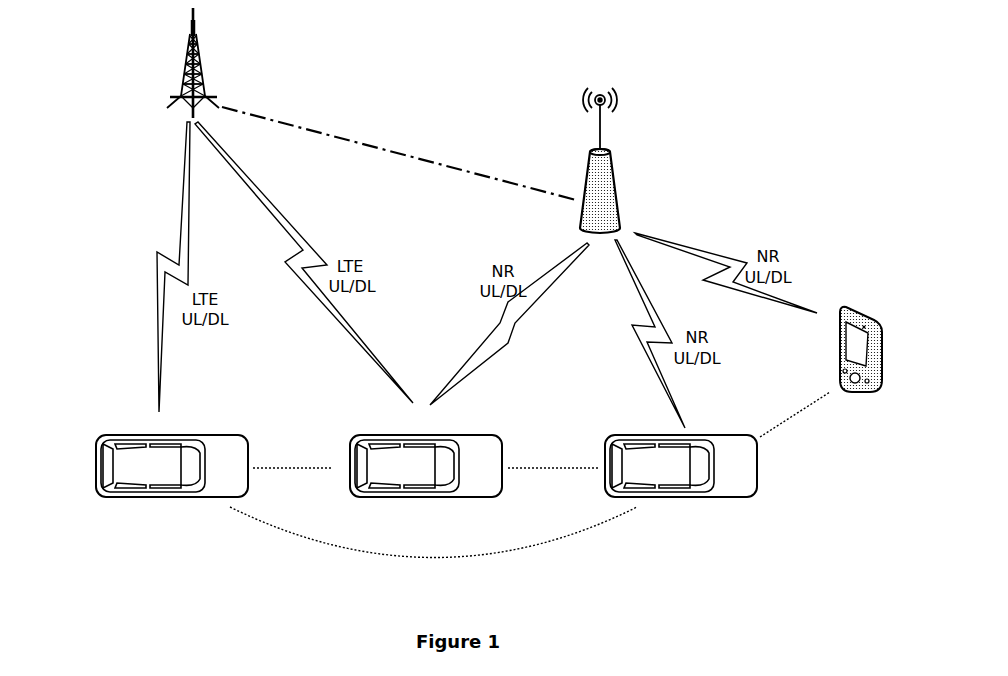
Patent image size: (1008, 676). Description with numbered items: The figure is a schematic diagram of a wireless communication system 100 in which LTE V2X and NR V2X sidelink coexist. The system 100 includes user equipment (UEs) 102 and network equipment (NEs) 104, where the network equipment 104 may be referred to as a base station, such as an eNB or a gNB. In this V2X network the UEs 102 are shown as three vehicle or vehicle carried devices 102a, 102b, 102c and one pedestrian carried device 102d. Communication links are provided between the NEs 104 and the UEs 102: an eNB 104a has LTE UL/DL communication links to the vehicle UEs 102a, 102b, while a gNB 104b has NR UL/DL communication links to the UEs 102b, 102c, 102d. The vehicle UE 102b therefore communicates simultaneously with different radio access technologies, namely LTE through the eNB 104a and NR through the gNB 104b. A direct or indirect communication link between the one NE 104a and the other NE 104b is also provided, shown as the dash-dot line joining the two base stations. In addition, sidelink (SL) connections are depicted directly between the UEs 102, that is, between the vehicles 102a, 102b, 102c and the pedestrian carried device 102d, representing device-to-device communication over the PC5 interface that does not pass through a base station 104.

The wireless communication system 100 is at (772, 124).
The user equipment 102 is at (433, 489).
The vehicle or vehicle carried device 102a is at (172, 487).
The vehicle or vehicle carried device 102b is at (426, 487).
The vehicle or vehicle carried device 102c is at (681, 487).
The pedestrian carried device 102d is at (862, 378).
The network equipment 104 is at (332, 149).
The eNB 104a is at (213, 63).
The gNB 104b is at (630, 160).